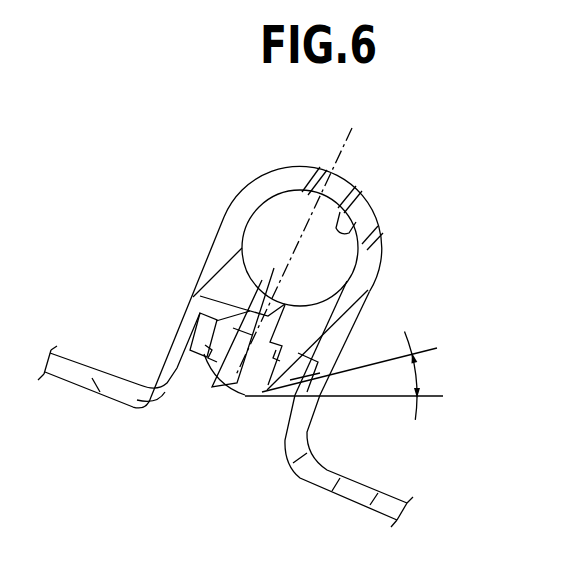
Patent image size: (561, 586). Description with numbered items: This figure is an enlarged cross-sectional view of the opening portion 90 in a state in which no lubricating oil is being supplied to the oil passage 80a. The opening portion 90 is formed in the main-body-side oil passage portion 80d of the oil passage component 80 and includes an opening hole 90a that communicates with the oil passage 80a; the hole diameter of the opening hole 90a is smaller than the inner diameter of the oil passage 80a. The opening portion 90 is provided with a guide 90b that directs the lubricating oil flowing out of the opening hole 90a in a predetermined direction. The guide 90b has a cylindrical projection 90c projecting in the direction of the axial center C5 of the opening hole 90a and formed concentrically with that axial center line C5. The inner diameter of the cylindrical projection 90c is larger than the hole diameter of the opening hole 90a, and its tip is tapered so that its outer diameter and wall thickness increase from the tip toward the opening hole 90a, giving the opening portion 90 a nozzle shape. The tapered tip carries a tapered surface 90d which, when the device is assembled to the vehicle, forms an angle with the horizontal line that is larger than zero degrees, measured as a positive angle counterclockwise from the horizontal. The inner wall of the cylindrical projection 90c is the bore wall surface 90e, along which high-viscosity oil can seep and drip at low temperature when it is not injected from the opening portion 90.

The oil passage component 80 is at (271, 150).
The oil passage 80a is at (360, 210).
The main-body-side oil passage portion 80d is at (236, 197).
The opening portion 90 is at (166, 458).
The opening hole 90a is at (206, 296).
The guide 90b is at (204, 367).
The cylindrical projection 90c is at (190, 350).
The tapered surface 90d is at (290, 402).
The bore wall surface 90e is at (300, 352).
The axial center line C5 is at (355, 147).